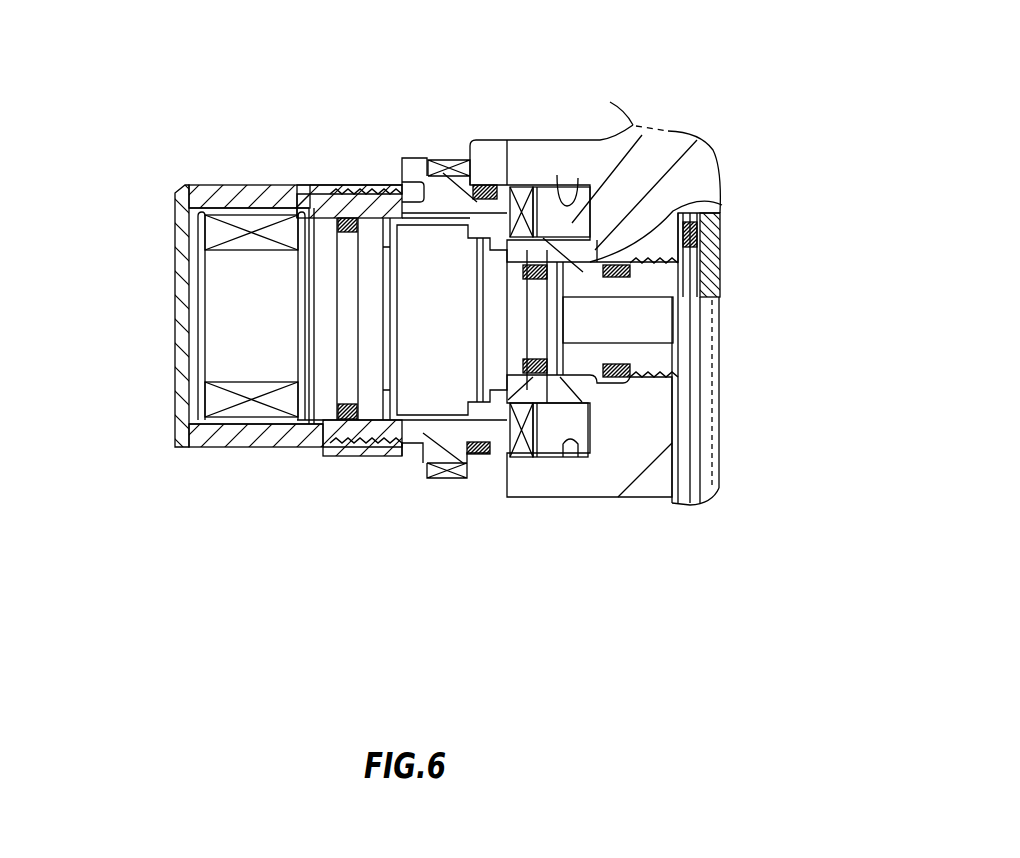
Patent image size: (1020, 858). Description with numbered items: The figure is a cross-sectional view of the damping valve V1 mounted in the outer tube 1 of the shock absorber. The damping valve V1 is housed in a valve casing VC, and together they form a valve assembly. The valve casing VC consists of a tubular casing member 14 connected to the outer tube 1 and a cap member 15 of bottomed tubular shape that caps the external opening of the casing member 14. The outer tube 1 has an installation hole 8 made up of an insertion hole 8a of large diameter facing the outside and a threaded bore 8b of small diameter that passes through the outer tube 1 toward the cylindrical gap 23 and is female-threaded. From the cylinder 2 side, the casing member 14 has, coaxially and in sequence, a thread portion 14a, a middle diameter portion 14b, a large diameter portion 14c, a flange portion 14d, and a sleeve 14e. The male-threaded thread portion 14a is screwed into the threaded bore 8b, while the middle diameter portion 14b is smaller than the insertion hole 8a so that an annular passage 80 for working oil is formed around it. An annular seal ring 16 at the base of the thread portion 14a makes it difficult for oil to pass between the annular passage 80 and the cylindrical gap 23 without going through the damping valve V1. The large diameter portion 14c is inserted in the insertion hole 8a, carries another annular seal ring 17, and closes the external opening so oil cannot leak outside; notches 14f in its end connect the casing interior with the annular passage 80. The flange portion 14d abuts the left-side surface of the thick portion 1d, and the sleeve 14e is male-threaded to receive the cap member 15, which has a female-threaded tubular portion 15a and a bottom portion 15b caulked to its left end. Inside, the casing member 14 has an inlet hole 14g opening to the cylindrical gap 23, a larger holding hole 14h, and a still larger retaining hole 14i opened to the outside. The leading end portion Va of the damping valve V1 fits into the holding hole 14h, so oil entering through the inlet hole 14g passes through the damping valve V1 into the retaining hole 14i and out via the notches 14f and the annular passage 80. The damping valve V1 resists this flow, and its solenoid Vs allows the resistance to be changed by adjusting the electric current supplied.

The outer tube 1 is at (738, 258).
The thick portion 1d is at (525, 192).
The cylinder 2 is at (677, 393).
The installation hole 8 is at (596, 314).
The insertion hole 8a is at (583, 457).
The threaded bore 8b is at (667, 460).
The annular passage 80 is at (643, 158).
The casing member 14 is at (402, 304).
The thread portion 14a is at (692, 272).
The middle diameter portion 14b is at (555, 457).
The large diameter portion 14c is at (447, 466).
The flange portion 14d is at (452, 152).
The sleeve 14e is at (345, 456).
The notches 14f is at (543, 140).
The inlet hole 14g is at (672, 337).
The holding hole 14h is at (668, 368).
The retaining hole 14i is at (385, 457).
The cap member 15 is at (232, 315).
The tubular portion 15a is at (298, 185).
The bottom portion 15b is at (173, 362).
The annular seal ring 16 is at (613, 385).
The annular seal ring 17 is at (492, 147).
The cylindrical gap 23 is at (657, 450).
The valve casing VC is at (226, 178).
The solenoid Vs is at (173, 238).
The damping valve V1 is at (287, 432).
The leading end portion Va is at (722, 205).